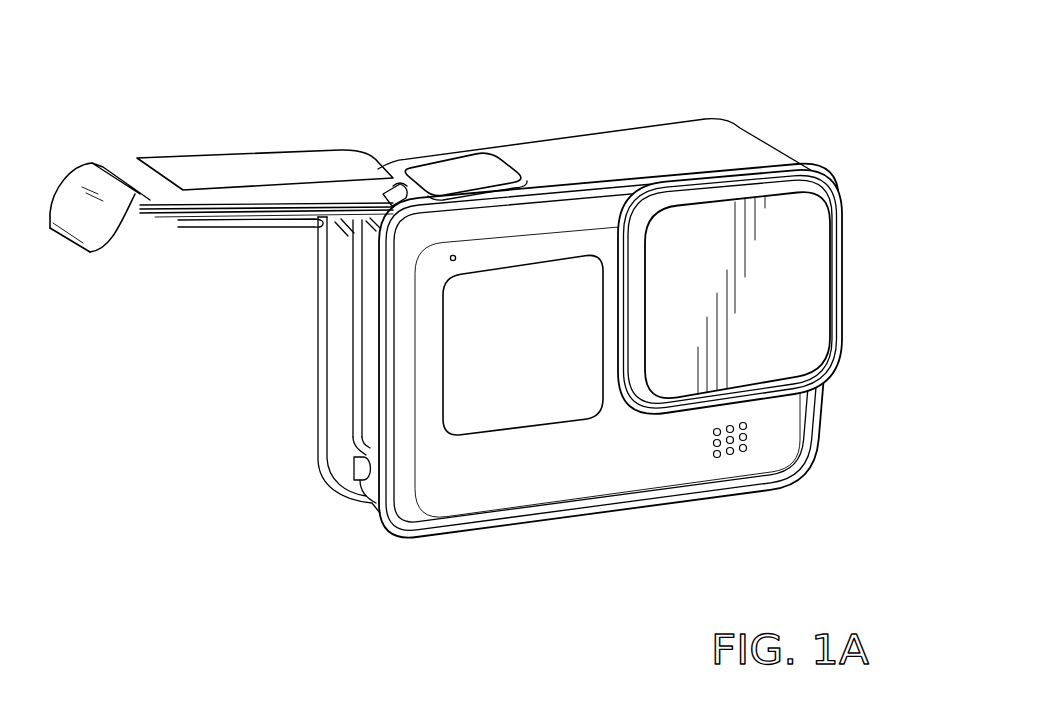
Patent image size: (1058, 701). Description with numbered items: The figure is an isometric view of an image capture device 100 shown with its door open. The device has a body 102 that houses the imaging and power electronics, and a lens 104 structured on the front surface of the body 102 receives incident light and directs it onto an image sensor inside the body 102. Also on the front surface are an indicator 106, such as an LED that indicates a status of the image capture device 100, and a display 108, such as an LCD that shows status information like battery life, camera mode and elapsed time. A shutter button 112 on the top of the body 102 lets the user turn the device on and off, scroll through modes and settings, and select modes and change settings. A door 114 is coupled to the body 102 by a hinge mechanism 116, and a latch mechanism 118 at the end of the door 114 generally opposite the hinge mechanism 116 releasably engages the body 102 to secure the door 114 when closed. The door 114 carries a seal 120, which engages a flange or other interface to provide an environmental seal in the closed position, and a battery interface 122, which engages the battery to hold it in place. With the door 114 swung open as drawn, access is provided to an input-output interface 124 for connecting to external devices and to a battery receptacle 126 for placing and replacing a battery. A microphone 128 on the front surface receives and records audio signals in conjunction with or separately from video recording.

The image capture device 100 is at (475, 313).
The body 102 is at (633, 147).
The lens 104 is at (803, 292).
The indicator 106 is at (450, 260).
The display 108 is at (528, 405).
The shutter button 112 is at (419, 167).
The door 114 is at (268, 158).
The hinge mechanism 116 is at (392, 186).
The latch mechanism 118 is at (75, 178).
The seal 120 is at (157, 220).
The battery interface 122 is at (214, 228).
The input-output (I/O) interface 124 is at (363, 468).
The battery receptacle 126 is at (362, 244).
The microphone 128 is at (730, 455).